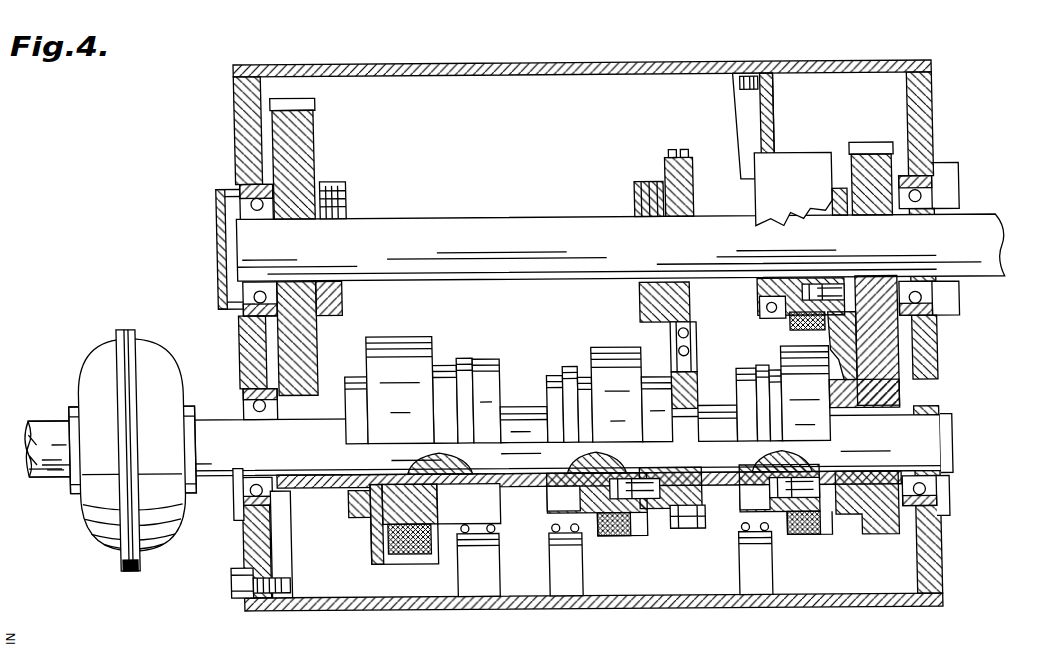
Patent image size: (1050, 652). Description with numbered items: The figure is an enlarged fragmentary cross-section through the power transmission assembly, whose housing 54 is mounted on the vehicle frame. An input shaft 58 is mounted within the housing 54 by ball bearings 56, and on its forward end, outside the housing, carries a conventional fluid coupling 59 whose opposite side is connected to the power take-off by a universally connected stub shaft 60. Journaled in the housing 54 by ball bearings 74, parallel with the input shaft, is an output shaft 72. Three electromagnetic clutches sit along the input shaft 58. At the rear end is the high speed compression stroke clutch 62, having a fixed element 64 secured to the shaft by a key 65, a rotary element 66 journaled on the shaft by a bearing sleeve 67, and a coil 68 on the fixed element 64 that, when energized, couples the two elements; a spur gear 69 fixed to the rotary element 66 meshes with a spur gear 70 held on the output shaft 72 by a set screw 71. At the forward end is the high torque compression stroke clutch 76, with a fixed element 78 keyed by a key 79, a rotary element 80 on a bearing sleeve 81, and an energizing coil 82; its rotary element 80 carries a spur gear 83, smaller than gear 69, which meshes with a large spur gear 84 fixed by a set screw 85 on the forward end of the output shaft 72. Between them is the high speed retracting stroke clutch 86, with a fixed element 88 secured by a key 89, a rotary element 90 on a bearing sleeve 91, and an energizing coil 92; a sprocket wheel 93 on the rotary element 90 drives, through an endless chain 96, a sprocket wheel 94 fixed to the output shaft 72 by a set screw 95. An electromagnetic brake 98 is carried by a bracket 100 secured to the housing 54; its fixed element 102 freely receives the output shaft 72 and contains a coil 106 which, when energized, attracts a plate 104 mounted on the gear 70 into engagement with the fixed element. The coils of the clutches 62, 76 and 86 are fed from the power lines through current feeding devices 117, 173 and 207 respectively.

The housing 54 is at (587, 318).
The ball bearings 56 is at (598, 497).
The input shaft 58 is at (517, 446).
The fluid coupling 59 is at (118, 450).
The stub shaft 60 is at (37, 436).
The high speed compression stroke electromagnetic clutch 62 is at (758, 335).
The fixed element 64 is at (745, 389).
The key 65 is at (782, 440).
The rotary element 66 is at (841, 346).
The bearing sleeve 67 is at (909, 341).
The coil 68 is at (786, 515).
The spur gear 69 is at (907, 519).
The spur gear 70 is at (914, 175).
The set screw 71 is at (818, 200).
The output shaft 72 is at (599, 233).
The ball bearings 74 is at (578, 247).
The high torque compression stroke electromagnetic clutch 76 is at (422, 373).
The fixed element 78 is at (399, 369).
The key 79 is at (588, 445).
The rotary element 80 is at (359, 521).
The bearing sleeve 81 is at (236, 441).
The energizing coil 82 is at (397, 535).
The spur gear 83 is at (250, 544).
The large spur gear 84 is at (318, 247).
The set screw 85 is at (350, 246).
The high speed retracting stroke electromagnetic clutch 86 is at (545, 373).
The fixed element 88 is at (631, 376).
The key 89 is at (596, 437).
The rotary element 90 is at (656, 519).
The bearing sleeve 91 is at (670, 449).
The energizing coil 92 is at (598, 521).
The sprocket wheel 93 is at (697, 526).
The sprocket wheel 94 is at (685, 235).
The set screw 95 is at (634, 199).
The endless chain 96 is at (703, 359).
The electromagnetic brake 98 is at (794, 169).
The bracket 100 is at (731, 126).
The fixed element 102 is at (800, 274).
The plate 104 is at (831, 280).
The coil 106 is at (805, 393).
The current feeding device 117 is at (779, 577).
The current feeding device 173 is at (451, 562).
The current feeding device 207 is at (587, 578).